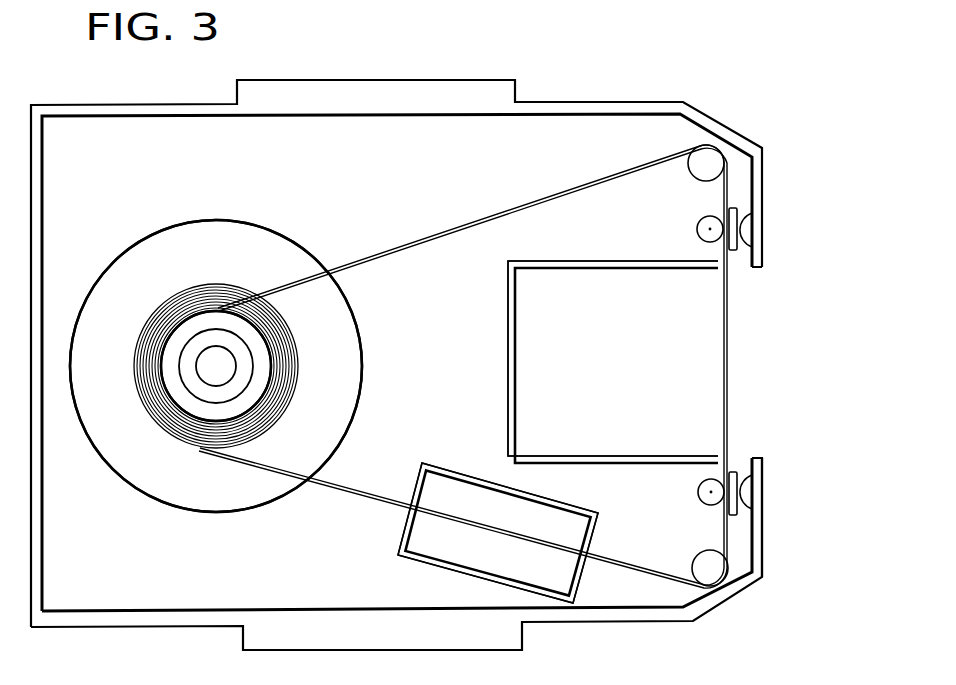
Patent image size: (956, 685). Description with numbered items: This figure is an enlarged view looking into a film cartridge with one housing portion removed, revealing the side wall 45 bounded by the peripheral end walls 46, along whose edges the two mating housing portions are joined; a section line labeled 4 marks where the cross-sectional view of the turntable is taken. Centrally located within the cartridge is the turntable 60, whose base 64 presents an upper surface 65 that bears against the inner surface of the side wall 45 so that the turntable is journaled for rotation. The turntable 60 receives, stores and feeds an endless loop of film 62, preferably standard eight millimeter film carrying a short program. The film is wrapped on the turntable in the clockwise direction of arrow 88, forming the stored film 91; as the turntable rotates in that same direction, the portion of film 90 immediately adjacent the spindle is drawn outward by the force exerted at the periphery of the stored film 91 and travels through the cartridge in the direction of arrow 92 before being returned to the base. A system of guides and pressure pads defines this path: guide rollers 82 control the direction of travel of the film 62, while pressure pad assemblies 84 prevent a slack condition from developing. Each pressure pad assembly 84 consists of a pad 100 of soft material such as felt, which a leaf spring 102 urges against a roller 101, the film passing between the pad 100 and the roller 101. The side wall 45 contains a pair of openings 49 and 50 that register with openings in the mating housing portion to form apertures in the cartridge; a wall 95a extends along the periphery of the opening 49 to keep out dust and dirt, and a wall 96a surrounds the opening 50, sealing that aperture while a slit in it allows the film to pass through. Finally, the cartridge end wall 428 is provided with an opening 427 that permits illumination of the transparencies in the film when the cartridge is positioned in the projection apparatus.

The side wall 45 is at (584, 125).
The peripheral end walls 46 is at (650, 100).
The end wall 428 is at (762, 459).
The pressure pad assemblies 84 is at (775, 221).
The opening 427 is at (752, 350).
The turntable 60 is at (272, 219).
The base 64 is at (186, 514).
The stored film 91 is at (187, 447).
The portion of film 90 is at (185, 312).
The upper surface 65 is at (225, 489).
The arrow 88 is at (368, 377).
The film 62 is at (376, 505).
The arrow 92 is at (480, 206).
The guide rollers 82 is at (698, 170).
The roller 101 is at (697, 228).
The pad 100 is at (738, 250).
The leaf spring 102 is at (745, 240).
The opening 49 is at (629, 376).
The wall 95a is at (578, 262).
The opening 50 is at (509, 563).
The wall 96a is at (400, 552).
The section line 4- 4 is at (65, 367).